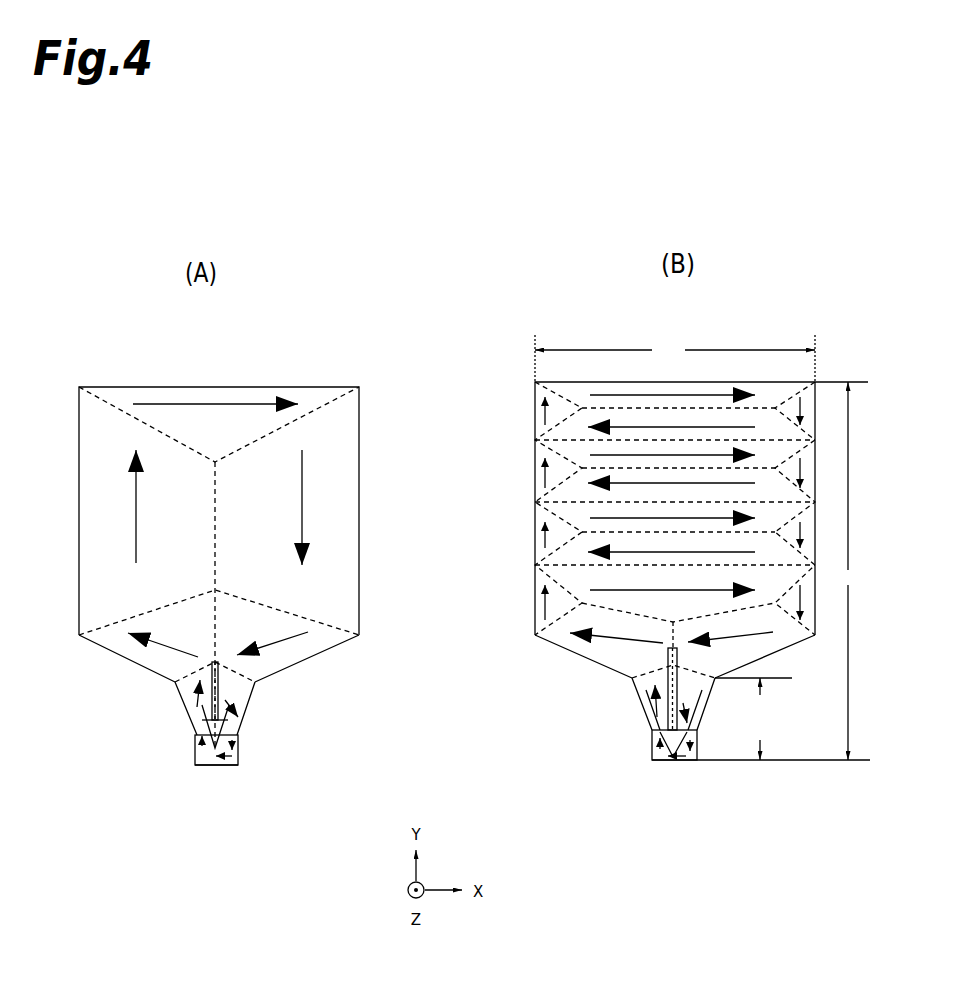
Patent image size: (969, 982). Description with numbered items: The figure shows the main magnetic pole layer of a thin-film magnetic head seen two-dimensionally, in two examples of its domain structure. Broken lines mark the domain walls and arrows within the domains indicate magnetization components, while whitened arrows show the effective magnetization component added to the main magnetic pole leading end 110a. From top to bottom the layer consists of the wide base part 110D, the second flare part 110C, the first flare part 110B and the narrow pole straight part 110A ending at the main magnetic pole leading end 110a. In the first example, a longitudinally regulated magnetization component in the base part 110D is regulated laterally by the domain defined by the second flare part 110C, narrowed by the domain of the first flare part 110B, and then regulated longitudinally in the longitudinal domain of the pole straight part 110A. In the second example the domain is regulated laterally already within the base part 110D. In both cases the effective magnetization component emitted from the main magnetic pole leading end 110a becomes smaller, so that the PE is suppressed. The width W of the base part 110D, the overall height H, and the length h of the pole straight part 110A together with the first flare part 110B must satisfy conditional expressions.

The base part 110D is at (345, 437).
The second flare part 110C is at (305, 642).
The first flare part 110B is at (242, 705).
The pole straight part 110A is at (238, 753).
The main magnetic pole leading end 110a is at (213, 767).